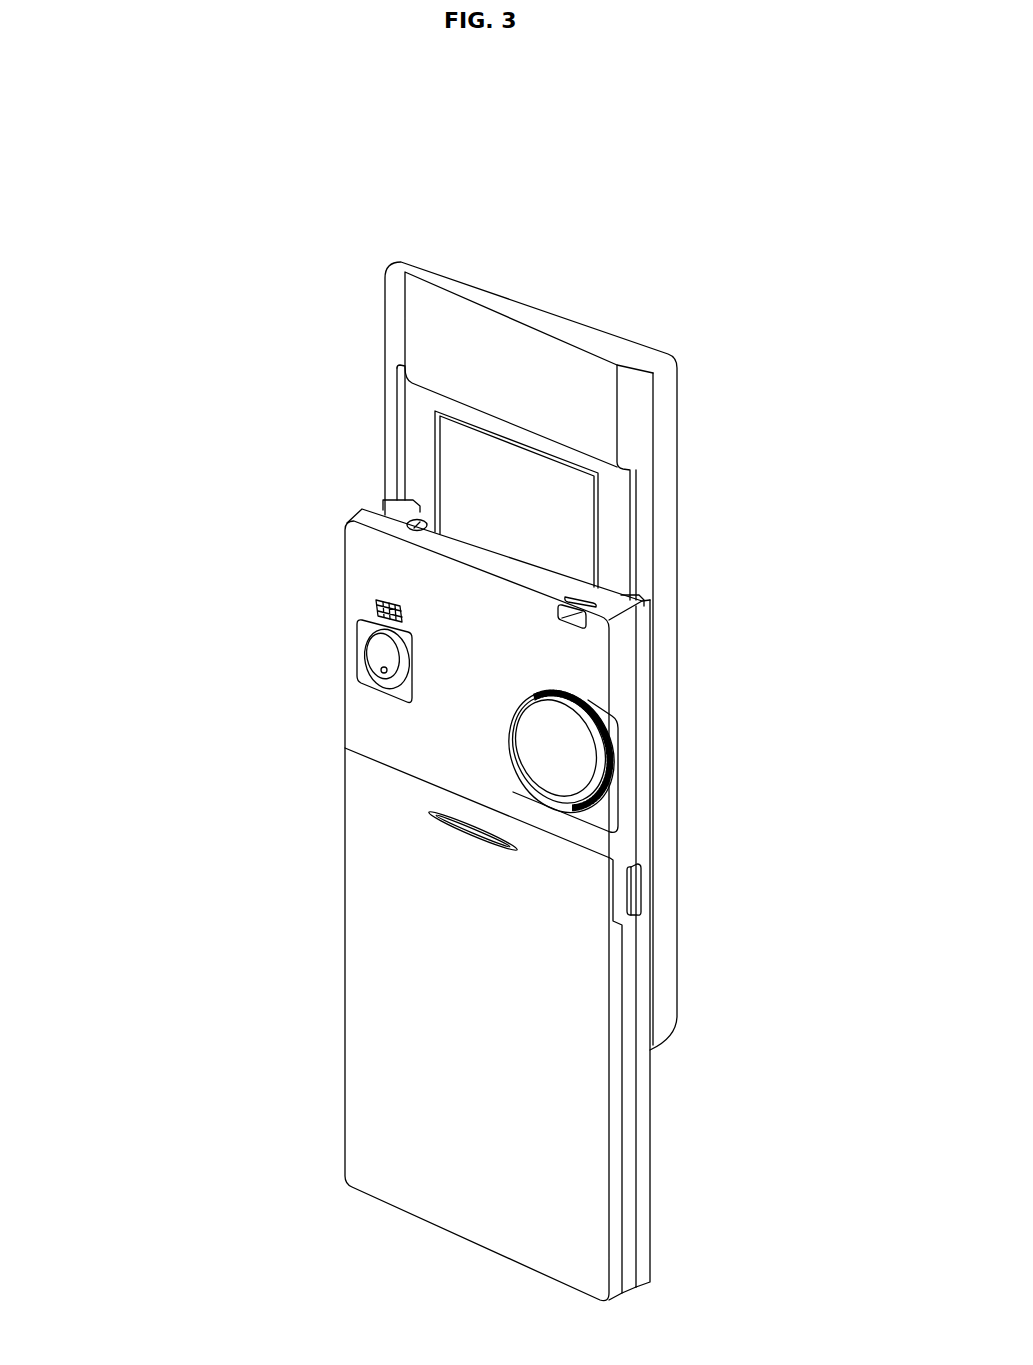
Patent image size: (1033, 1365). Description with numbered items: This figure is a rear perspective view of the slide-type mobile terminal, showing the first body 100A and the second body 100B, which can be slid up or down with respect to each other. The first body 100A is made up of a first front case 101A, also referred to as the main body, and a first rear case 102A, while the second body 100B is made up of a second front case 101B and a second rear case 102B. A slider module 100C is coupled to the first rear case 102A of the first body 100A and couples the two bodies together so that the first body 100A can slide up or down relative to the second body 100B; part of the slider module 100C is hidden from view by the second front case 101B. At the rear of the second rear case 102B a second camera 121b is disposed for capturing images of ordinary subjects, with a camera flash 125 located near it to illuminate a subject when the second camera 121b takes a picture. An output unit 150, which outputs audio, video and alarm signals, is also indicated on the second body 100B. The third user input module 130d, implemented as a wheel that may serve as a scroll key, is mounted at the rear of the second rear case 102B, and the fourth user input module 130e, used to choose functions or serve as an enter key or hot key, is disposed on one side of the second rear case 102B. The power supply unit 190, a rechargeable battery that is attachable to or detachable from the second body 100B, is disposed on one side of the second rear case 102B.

The first body 100A is at (228, 306).
The first front case 101A is at (462, 270).
The first rear case 102A is at (428, 278).
The slider module 100C is at (468, 456).
The second body 100B is at (184, 793).
The second front case 101B is at (645, 1110).
The second rear case 102B is at (632, 1182).
The output unit 150 is at (368, 514).
The camera flash 125 is at (372, 608).
The second camera 121b is at (382, 656).
The third user input module 130d is at (620, 772).
The fourth user input module 130e is at (645, 887).
The power supply unit 190 is at (393, 985).